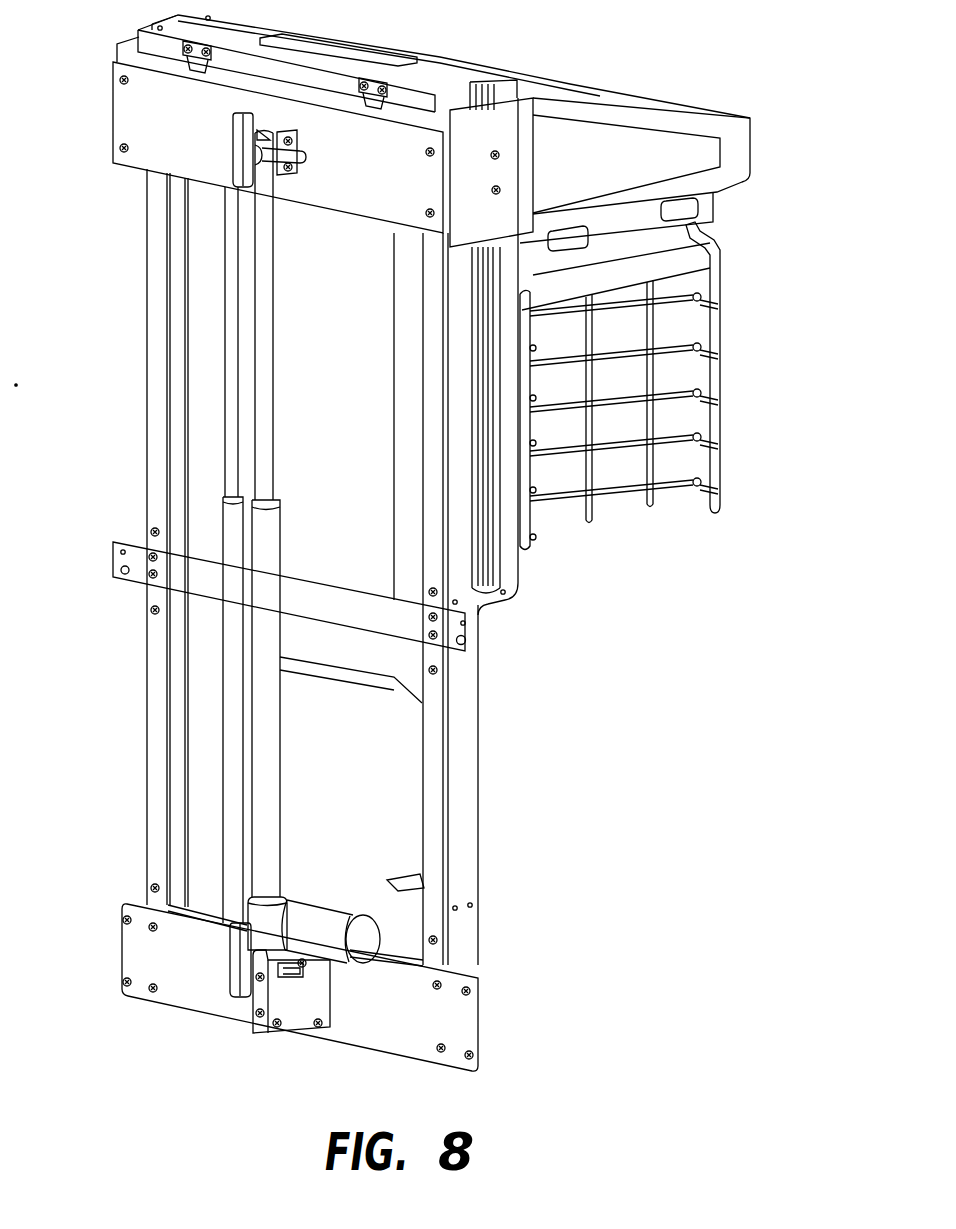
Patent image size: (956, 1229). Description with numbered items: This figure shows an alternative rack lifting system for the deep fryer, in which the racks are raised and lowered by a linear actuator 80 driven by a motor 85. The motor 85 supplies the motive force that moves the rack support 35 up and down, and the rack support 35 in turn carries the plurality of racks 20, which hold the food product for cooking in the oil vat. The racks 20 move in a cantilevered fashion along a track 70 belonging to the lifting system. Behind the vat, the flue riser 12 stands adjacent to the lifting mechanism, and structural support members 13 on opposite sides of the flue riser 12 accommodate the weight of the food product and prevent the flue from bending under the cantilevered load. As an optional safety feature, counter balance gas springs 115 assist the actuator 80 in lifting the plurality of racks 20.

The flue riser 12 is at (337, 377).
The structural support members 13 is at (147, 800).
The plurality of racks 20 is at (720, 417).
The rack support 35 is at (727, 127).
The track 70 is at (478, 90).
The linear actuator 80 is at (283, 775).
The motor 85 is at (322, 911).
The counter balance gas springs 115 is at (223, 677).